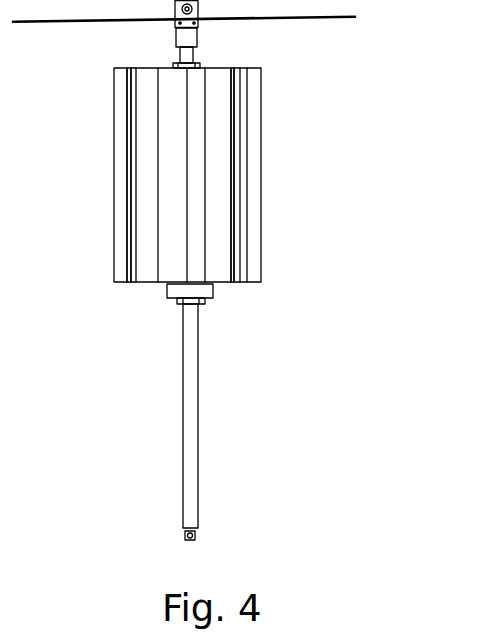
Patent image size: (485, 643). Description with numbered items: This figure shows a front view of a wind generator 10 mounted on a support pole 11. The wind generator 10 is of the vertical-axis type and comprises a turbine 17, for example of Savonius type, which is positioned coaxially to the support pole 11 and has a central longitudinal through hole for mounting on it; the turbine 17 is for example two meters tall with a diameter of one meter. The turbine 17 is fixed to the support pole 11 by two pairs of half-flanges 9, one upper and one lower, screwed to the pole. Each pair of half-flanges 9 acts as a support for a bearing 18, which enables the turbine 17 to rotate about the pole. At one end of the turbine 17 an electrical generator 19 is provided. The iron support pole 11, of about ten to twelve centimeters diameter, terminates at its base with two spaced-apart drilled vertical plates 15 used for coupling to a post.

The half-flanges 9 is at (183, 197).
The wind generator 10 is at (236, 175).
The support pole 11 is at (226, 416).
The drilled vertical plates 15 is at (227, 539).
The turbine 17 is at (223, 175).
The bearing 18 is at (252, 175).
The electrical generator 19 is at (153, 305).